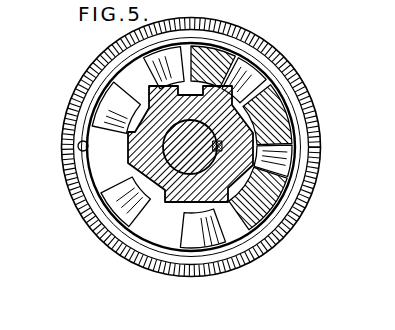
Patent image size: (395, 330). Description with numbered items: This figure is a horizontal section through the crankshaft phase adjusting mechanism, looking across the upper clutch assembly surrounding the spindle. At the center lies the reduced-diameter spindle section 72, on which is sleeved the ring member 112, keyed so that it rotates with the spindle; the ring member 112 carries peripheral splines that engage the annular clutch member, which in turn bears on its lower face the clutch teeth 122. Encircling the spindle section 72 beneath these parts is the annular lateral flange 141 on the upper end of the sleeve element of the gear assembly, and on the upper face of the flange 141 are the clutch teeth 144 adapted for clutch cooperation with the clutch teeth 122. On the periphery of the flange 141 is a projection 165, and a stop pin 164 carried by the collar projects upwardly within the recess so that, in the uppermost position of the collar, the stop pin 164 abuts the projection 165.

The spindle section of reduced diameter 72 is at (185, 174).
The ring member 112 is at (245, 100).
The clutch teeth 122 is at (277, 203).
The annular lateral flange 141 is at (100, 208).
The clutch teeth 144 is at (112, 124).
The stop pin 164 is at (78, 146).
The projection 165 is at (78, 169).